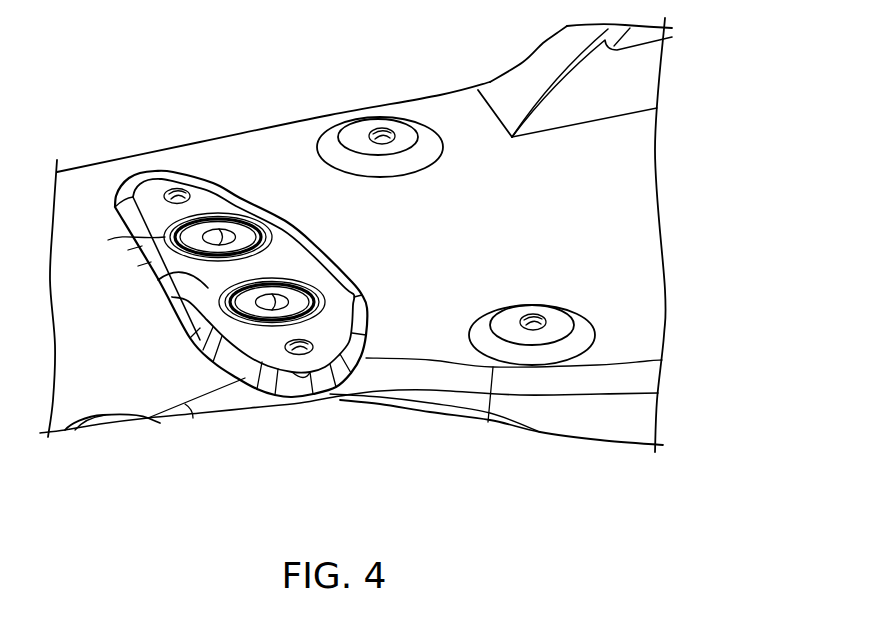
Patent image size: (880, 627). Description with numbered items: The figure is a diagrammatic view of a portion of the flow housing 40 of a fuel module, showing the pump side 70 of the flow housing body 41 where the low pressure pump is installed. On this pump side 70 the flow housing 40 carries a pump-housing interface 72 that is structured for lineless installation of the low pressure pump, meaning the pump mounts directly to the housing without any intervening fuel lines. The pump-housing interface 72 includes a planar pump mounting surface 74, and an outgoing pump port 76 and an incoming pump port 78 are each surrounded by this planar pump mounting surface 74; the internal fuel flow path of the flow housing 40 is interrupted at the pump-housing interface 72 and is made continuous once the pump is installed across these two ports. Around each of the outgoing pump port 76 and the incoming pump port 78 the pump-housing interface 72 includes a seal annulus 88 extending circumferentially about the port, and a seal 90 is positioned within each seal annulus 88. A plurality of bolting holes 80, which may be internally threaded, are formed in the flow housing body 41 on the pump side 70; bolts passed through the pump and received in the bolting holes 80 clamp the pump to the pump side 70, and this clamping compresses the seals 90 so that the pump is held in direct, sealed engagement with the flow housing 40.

The flow housing 40 is at (676, 127).
The flow housing body 41 is at (643, 194).
The pump side 70 is at (225, 219).
The pump-housing interface 72 is at (225, 284).
The planar pump mounting surface 74 is at (152, 280).
The outgoing pump port 76 is at (205, 345).
The incoming pump port 78 is at (141, 268).
The bolting holes 80 is at (398, 137).
The seal annuluses 88 is at (217, 212).
The seals 90 is at (243, 213).